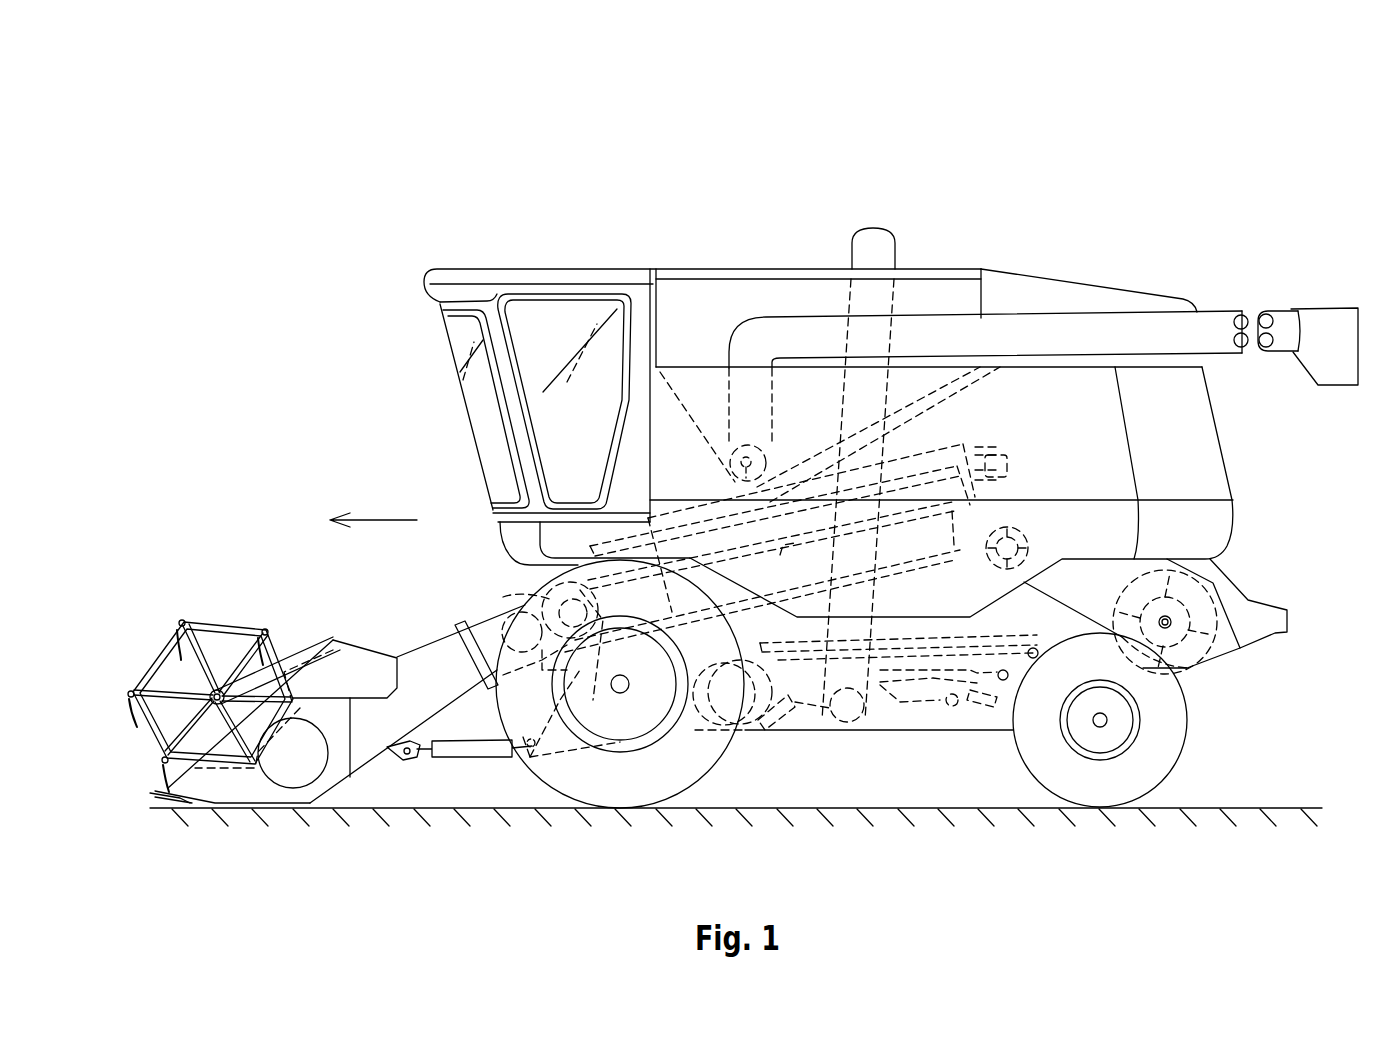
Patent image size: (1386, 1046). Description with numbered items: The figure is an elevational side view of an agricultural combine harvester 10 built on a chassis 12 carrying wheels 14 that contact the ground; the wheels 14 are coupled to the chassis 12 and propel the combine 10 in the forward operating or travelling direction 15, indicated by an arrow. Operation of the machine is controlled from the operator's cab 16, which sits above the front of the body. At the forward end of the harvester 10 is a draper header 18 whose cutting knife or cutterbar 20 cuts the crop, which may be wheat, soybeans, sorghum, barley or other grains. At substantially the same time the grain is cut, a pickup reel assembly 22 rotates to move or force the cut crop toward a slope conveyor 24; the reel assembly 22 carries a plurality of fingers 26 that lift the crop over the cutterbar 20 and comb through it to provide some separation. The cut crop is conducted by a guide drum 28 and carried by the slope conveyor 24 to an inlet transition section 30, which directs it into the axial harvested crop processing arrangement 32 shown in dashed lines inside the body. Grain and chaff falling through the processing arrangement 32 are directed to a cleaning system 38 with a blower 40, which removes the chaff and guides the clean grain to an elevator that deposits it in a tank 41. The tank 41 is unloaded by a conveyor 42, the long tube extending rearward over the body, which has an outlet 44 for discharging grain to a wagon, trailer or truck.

The agricultural combine harvester 10 is at (953, 160).
The chassis 12 is at (990, 715).
The wheels 14 is at (612, 782).
The forward operating or travelling direction 15 is at (378, 520).
The operator's cab 16 is at (523, 290).
The draper header 18 is at (280, 803).
The cutterbar 20 is at (176, 803).
The pickup reel assembly 22 is at (237, 612).
The slope conveyor 24 is at (370, 731).
The fingers 26 is at (177, 653).
The guide drum 28 is at (503, 597).
The inlet transition section 30 is at (610, 577).
The axial harvested crop processing arrangement 32 is at (958, 432).
The cleaning system 38 is at (898, 708).
The blower 40 is at (762, 720).
The tank 41 is at (700, 295).
The conveyor 42 is at (1155, 330).
The outlet 44 is at (1340, 370).